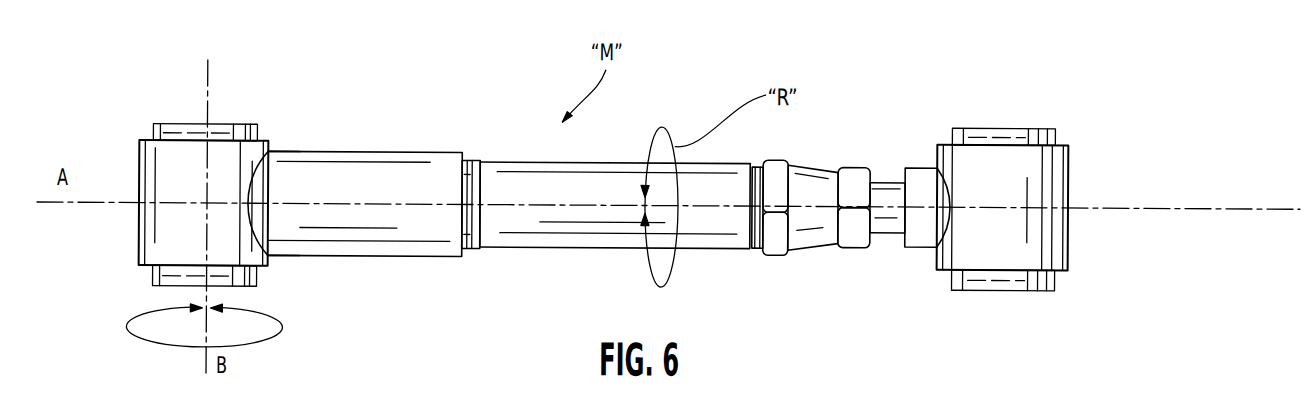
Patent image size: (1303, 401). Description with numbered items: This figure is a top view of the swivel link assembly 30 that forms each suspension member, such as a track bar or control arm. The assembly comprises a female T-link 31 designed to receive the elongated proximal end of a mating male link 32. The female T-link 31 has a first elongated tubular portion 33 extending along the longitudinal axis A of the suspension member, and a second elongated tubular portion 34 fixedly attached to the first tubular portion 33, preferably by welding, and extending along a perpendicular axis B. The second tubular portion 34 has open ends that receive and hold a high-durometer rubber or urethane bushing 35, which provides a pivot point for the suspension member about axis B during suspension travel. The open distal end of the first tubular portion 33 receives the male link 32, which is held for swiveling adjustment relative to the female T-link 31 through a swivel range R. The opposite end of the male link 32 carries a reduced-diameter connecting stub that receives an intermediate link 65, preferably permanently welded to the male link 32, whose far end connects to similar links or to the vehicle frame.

The swivel link assembly 30 is at (365, 86).
The female T-link 31 is at (291, 116).
The male link 32 is at (480, 145).
The first elongated tubular portion 33 is at (357, 237).
The second elongated tubular portion 34 is at (145, 163).
The bushing 35 is at (153, 125).
The intermediate link 65 is at (612, 166).